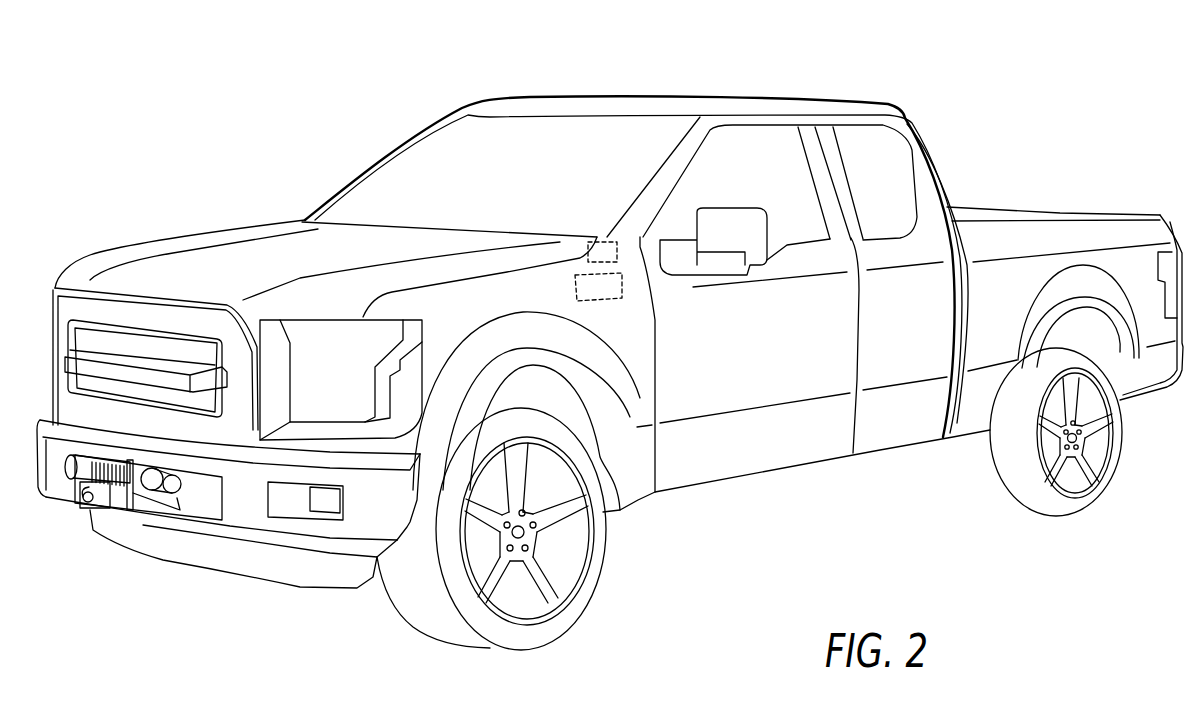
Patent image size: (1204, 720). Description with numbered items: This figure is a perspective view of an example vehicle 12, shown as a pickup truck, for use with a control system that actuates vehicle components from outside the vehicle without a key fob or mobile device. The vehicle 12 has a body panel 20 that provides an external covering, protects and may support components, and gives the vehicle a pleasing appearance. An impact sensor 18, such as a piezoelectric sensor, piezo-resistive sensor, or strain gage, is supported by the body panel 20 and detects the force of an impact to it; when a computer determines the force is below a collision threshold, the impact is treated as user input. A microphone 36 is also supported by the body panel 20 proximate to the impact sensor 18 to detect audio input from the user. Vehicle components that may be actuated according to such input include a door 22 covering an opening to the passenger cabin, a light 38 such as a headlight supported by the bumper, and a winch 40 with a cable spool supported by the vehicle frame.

The vehicle 12 is at (610, 339).
The impact sensor 18 is at (610, 299).
The body panel 20 is at (528, 300).
The door 22 is at (792, 368).
The microphone 36 is at (597, 240).
The light 38 is at (328, 377).
The winch 40 is at (147, 500).